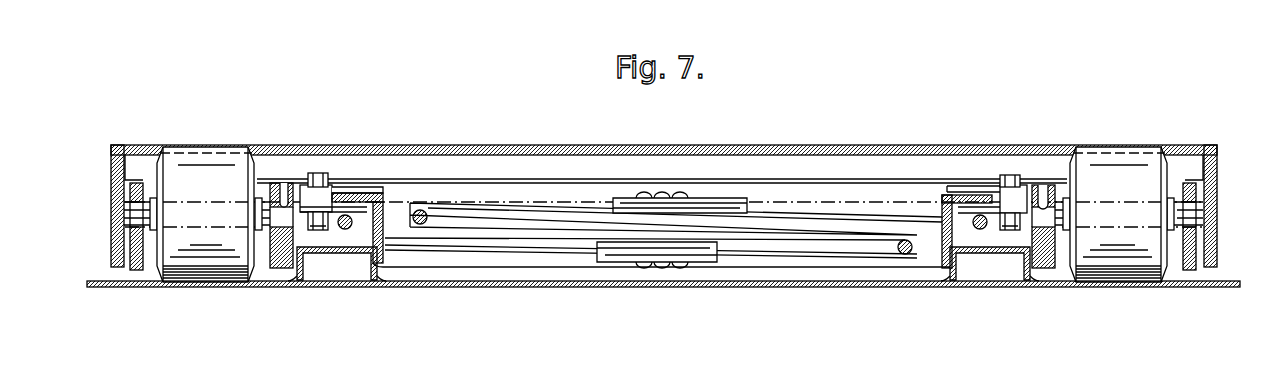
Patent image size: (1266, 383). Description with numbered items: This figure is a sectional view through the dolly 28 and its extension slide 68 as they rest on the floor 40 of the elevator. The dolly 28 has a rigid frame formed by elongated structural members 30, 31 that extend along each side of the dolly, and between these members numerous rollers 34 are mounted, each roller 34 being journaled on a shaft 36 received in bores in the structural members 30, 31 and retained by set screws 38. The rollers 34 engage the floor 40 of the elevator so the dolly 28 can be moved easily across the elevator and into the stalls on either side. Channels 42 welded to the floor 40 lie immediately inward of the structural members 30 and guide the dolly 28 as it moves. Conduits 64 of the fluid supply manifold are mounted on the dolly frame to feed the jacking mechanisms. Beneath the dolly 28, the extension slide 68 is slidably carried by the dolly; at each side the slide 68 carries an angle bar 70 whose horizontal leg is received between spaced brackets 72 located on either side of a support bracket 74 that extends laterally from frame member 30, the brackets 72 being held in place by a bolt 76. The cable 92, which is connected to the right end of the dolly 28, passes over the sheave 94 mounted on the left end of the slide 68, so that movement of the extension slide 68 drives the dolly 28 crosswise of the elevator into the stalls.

The dolly 28 is at (1012, 134).
The elongated structural member 30 is at (283, 270).
The elongated structural member 31 is at (138, 270).
The roller 34 is at (208, 146).
The shaft 36 is at (135, 215).
The set screw 38 is at (1043, 193).
The floor 40 is at (100, 281).
The channel 42 is at (307, 268).
The conduit 64 is at (345, 230).
The extension slide 68 is at (525, 268).
The angle bar 70 is at (387, 258).
The bracket 72 is at (381, 193).
The support bracket 74 is at (307, 193).
The bolt 76 is at (317, 172).
The cable 92 is at (907, 256).
The sheave 94 is at (823, 258).